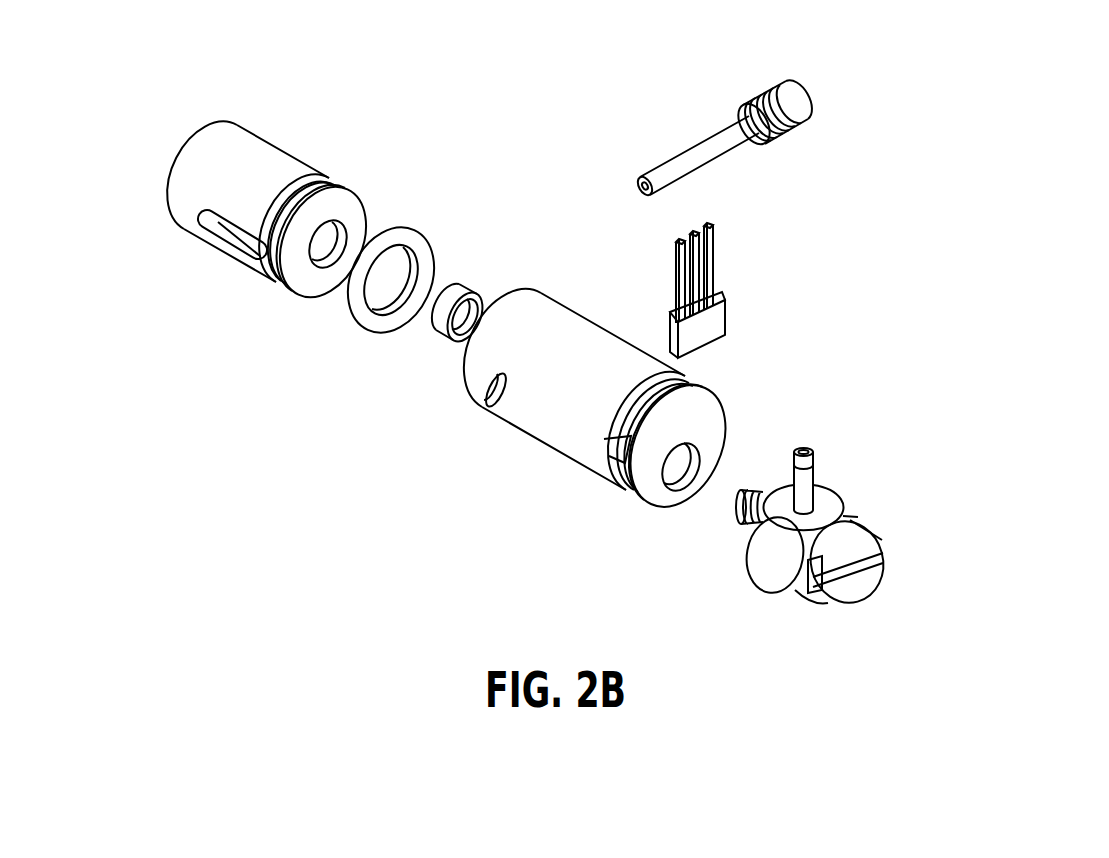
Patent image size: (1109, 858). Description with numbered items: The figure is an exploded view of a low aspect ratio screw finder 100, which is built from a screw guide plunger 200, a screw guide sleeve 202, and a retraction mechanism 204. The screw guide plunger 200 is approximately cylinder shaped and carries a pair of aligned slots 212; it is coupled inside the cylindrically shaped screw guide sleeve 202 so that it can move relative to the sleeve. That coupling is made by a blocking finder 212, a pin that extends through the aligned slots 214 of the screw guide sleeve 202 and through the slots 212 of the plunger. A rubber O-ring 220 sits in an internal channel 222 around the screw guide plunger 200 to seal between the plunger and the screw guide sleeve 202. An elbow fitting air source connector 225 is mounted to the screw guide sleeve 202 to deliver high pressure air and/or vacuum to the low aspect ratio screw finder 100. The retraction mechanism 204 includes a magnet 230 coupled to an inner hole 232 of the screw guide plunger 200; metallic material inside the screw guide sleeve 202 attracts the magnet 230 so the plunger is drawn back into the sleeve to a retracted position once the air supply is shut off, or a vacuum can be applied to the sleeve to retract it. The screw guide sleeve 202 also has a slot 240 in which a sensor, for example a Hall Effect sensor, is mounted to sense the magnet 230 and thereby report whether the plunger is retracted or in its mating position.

The low aspect ratio screw finder 100 is at (430, 112).
The screw guide plunger 200 is at (283, 205).
The screw guide sleeve 202 is at (567, 405).
The retraction mechanism 204 is at (594, 372).
The blocking finder 212 is at (231, 246).
The aligned slots 214 is at (450, 417).
The rubber O-ring 220 is at (410, 228).
The internal channel 222 is at (282, 286).
The elbow fitting air source connector 225 is at (817, 455).
The magnet 230 is at (457, 295).
The inner hole 232 is at (340, 236).
The slot 240 is at (715, 320).